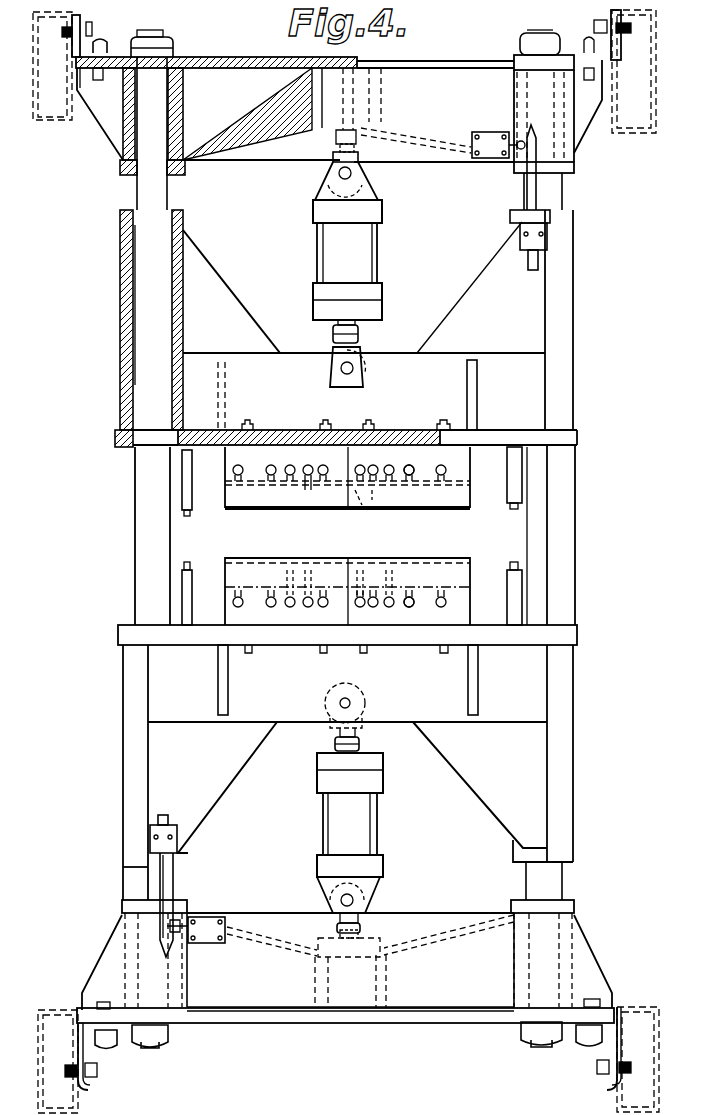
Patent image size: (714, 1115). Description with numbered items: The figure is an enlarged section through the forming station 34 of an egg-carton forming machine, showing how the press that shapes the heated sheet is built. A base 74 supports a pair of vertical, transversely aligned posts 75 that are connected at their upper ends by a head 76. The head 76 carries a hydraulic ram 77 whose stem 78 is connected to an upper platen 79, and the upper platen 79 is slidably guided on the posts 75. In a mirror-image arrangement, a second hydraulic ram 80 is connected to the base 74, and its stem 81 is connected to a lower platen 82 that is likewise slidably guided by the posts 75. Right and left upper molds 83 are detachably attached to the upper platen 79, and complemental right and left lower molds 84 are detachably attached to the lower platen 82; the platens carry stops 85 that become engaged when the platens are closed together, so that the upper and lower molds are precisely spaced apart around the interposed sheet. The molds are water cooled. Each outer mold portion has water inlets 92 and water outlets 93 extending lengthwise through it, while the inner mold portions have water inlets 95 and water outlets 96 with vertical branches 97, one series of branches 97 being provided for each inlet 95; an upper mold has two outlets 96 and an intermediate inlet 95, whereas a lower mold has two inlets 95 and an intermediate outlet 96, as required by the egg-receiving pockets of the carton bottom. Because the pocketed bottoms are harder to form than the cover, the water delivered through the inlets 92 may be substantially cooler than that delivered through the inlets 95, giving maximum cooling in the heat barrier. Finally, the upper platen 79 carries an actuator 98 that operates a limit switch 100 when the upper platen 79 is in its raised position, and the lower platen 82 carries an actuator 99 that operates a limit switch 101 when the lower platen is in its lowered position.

The forming station 34 is at (580, 331).
The base 74 is at (247, 1020).
The posts 75 is at (140, 573).
The head 76 is at (457, 68).
The hydraulic ram 77 is at (362, 257).
The stem 78 is at (358, 325).
The upper platen 79 is at (395, 432).
The hydraulic ram 80 is at (367, 833).
The stem 81 is at (357, 735).
The lower platen 82 is at (305, 633).
The upper molds 83 is at (235, 497).
The lower molds 84 is at (243, 612).
The stops 85 is at (520, 563).
The water inlets 92 is at (271, 465).
The water outlets 93 is at (238, 465).
The water inlets 95 is at (290, 462).
The water outlets 96 is at (389, 465).
The vertical branches 97 is at (398, 563).
The actuator 98 is at (537, 200).
The actuator 99 is at (163, 885).
The limit switch 100 is at (495, 163).
The limit switch 101 is at (207, 920).